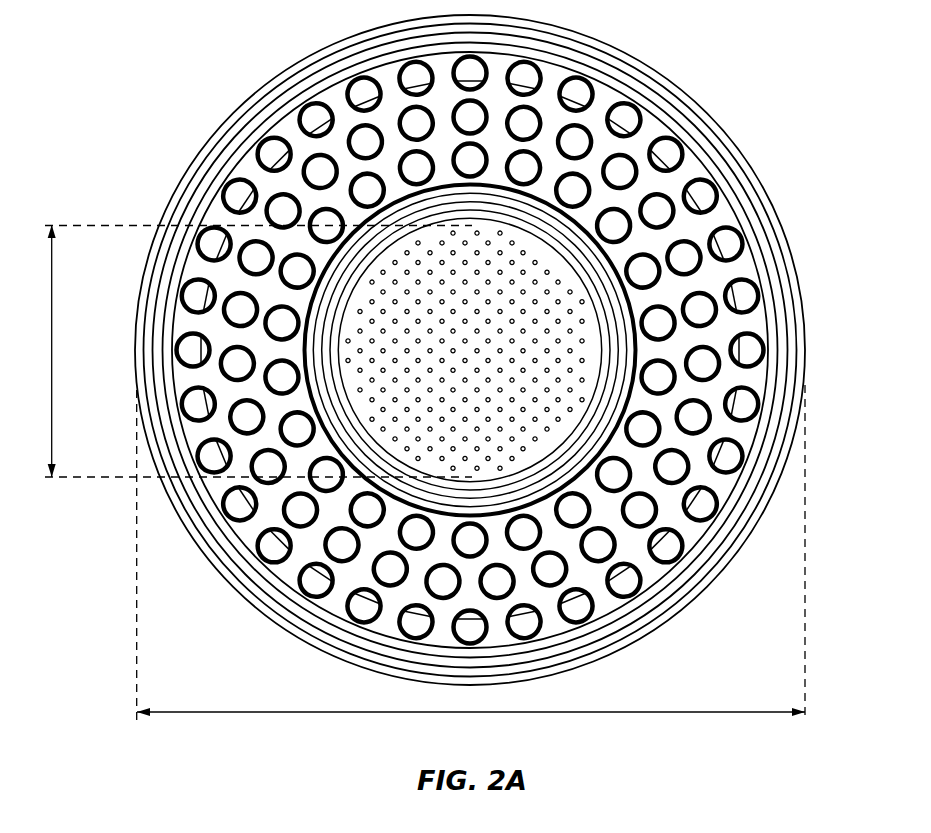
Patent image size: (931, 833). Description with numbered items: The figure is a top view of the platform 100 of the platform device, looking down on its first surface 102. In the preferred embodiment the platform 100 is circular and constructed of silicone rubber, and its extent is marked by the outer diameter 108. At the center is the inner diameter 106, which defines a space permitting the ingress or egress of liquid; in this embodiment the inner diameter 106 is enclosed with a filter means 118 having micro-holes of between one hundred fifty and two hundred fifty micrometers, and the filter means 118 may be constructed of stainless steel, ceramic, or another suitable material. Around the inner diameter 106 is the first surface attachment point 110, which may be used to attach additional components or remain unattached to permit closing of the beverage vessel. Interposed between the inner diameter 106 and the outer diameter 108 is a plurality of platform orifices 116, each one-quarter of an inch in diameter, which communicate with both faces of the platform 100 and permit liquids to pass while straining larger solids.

The platform 100 is at (175, 56).
The first surface 102 is at (707, 395).
The inner diameter 106 is at (52, 328).
The outer diameter 108 is at (286, 712).
The first surface attachment point 110 is at (550, 473).
The platform orifices 116 is at (343, 130).
The filter means 118 is at (555, 283).